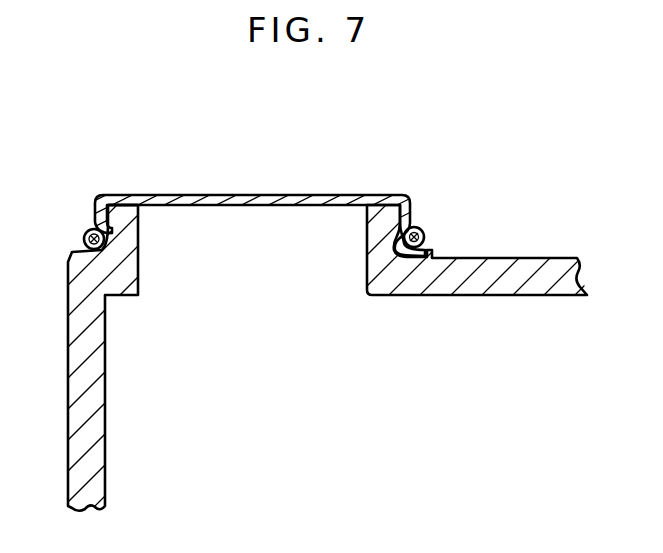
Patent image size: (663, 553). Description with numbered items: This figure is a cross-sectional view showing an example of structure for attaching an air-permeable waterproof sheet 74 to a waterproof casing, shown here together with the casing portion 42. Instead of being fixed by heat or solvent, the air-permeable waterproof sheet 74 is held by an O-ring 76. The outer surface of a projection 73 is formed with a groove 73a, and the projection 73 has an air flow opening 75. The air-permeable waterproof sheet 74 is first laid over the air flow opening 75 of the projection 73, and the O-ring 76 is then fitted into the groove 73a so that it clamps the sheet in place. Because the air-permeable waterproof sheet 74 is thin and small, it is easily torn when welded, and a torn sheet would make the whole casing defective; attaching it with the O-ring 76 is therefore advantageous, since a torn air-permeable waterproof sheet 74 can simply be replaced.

The wall 42 is at (503, 260).
The projection 73 is at (160, 287).
The groove 73a is at (140, 206).
The air-permeable waterproof sheet 74 is at (327, 194).
The air flow opening 75 is at (367, 247).
The O-ring 76 is at (80, 222).